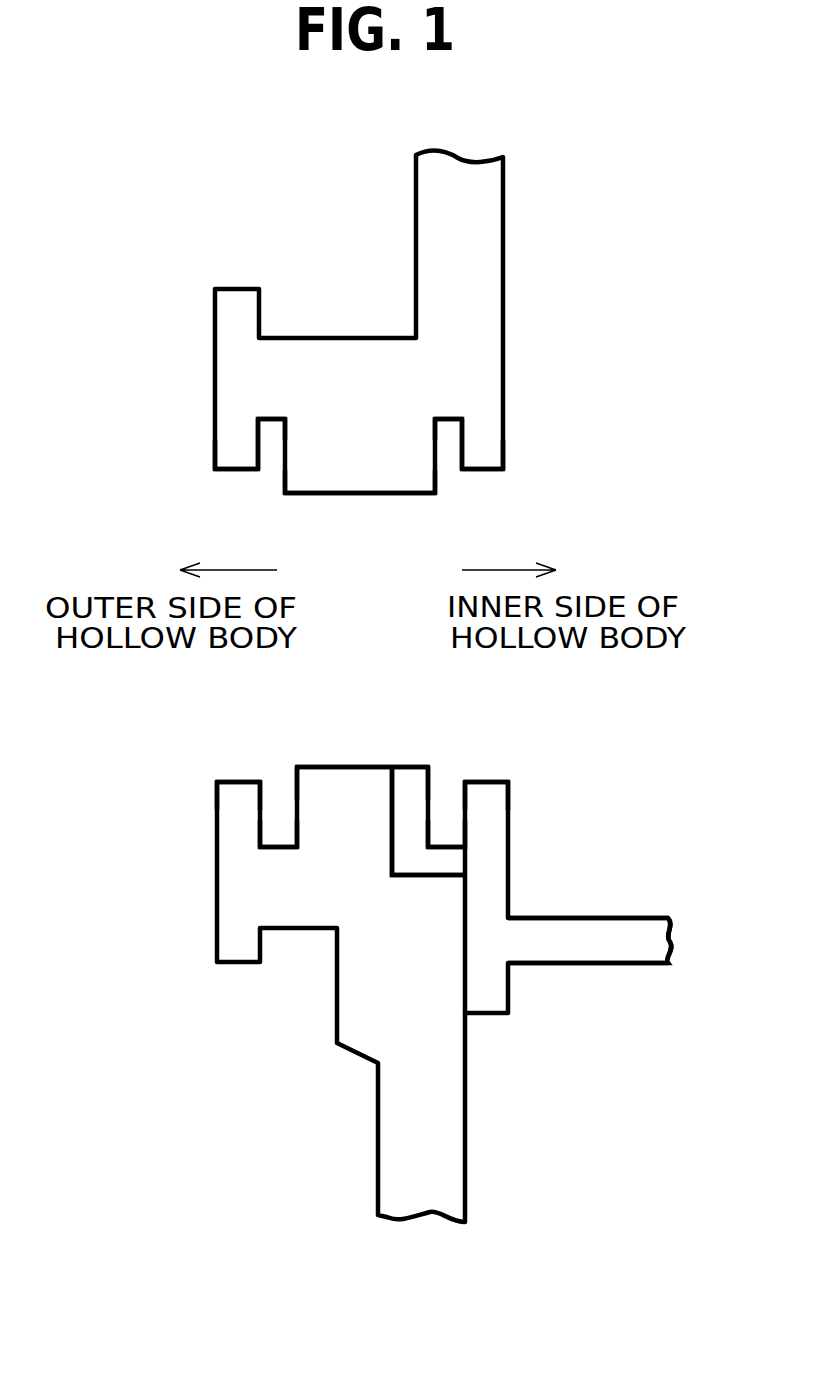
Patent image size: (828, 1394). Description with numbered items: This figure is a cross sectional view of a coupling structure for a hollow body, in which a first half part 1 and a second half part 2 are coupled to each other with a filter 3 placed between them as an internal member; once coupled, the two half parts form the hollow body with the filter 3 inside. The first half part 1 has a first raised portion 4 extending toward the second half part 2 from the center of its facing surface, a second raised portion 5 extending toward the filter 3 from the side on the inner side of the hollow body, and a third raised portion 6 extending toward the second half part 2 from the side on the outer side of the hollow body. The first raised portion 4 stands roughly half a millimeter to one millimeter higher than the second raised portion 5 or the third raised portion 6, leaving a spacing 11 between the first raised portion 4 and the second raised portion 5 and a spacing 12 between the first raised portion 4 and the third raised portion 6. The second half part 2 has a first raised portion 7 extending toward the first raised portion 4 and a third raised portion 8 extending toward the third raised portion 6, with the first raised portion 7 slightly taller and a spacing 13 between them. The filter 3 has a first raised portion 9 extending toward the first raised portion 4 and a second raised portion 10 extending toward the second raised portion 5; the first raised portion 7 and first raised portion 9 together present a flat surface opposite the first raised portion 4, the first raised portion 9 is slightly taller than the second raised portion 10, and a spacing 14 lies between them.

The first half part 1 is at (413, 236).
The second half part 2 is at (376, 1108).
The filter 3 is at (577, 965).
The first raised portion 4 is at (357, 495).
The second raised portion 5 is at (478, 472).
The third raised portion 6 is at (237, 472).
The first raised portion 7 is at (355, 767).
The third raised portion 8 is at (233, 782).
The first raised portion 9 is at (407, 767).
The second raised portion 10 is at (491, 782).
The spacing 11 is at (448, 422).
The spacing 12 is at (272, 422).
The spacing 13 is at (278, 847).
The spacing 14 is at (447, 847).